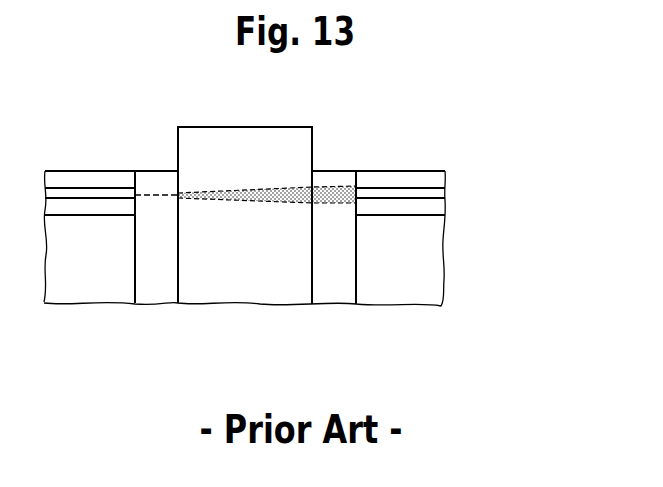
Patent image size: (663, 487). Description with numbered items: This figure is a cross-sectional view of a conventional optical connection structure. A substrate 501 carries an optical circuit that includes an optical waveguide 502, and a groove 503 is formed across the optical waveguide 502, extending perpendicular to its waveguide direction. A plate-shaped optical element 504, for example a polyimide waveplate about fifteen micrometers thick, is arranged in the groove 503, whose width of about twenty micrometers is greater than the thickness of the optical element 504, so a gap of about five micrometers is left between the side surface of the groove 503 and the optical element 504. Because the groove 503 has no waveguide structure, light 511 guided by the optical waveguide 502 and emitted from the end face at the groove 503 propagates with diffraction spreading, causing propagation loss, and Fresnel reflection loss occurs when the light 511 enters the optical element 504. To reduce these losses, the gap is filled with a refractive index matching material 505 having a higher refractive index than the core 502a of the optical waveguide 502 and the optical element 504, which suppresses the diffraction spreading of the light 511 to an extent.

The substrate 501 is at (444, 278).
The optical waveguide 502 is at (507, 171).
The core 502a is at (445, 194).
The groove 503 is at (135, 270).
The optical element 504 is at (242, 128).
The refractive index matching material 505 is at (153, 178).
The light 511 is at (253, 196).